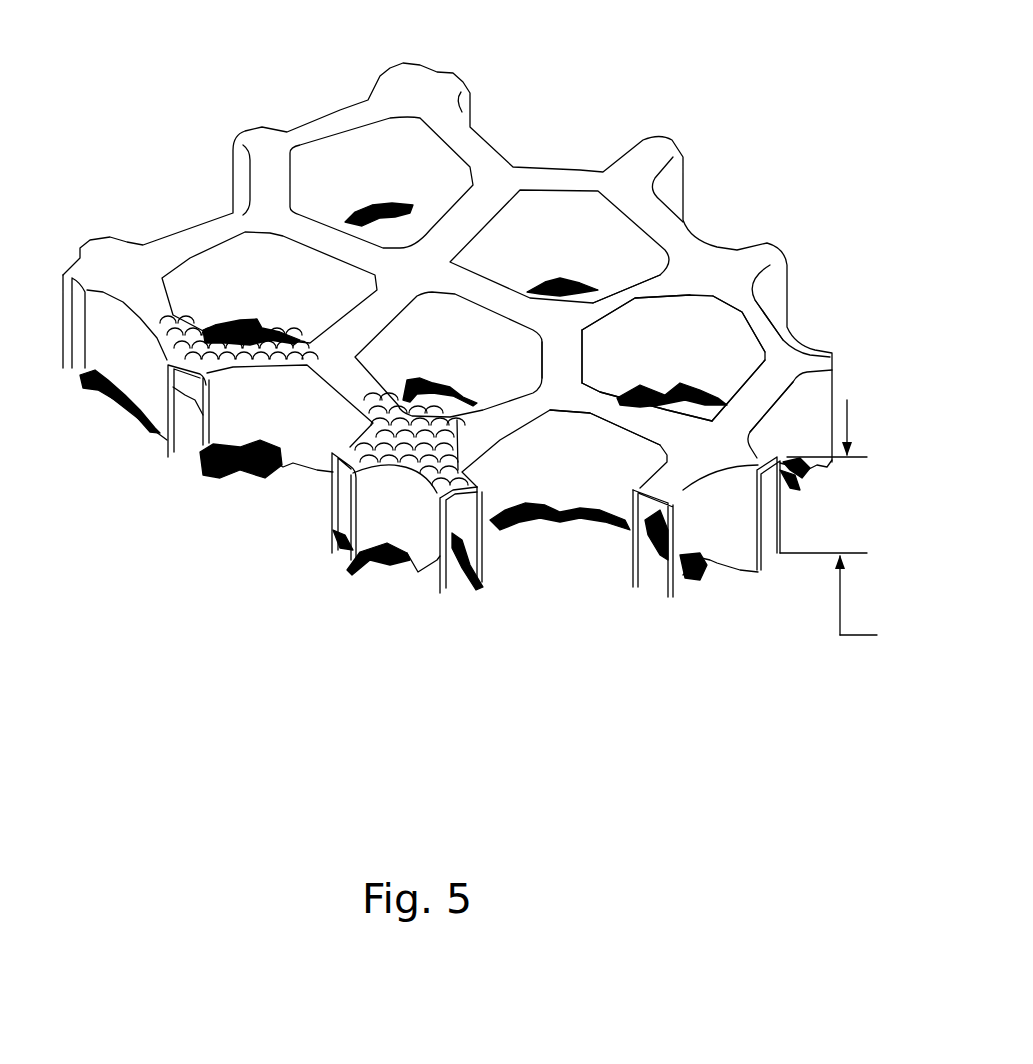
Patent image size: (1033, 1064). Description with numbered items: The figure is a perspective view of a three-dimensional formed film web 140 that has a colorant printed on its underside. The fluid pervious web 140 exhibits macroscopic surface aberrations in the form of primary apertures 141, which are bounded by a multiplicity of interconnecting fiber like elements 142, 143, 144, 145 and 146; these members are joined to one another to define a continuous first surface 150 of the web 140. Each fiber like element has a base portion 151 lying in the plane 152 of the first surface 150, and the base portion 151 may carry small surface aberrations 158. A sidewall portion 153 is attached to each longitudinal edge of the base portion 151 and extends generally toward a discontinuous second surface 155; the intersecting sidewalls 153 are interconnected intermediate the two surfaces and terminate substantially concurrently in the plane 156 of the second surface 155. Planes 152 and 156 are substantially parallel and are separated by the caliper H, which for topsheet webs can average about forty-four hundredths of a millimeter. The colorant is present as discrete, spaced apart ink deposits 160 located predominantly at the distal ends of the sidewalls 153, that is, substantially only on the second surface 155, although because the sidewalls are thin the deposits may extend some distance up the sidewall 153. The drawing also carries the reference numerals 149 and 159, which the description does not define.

The web 140 is at (212, 172).
The primary apertures 141 is at (351, 168).
The fiber like element 142 is at (695, 278).
The fiber like element 143 is at (778, 349).
The fiber like element 144 is at (779, 375).
The fiber like element 145 is at (686, 435).
The fiber like element 146 is at (562, 330).
The front face of panel 149 is at (576, 567).
The first surface 150 is at (477, 206).
The base portion 151 is at (470, 477).
The plane of first surface 152 is at (862, 449).
The sidewall portion 153 is at (440, 560).
The second surface 155 is at (738, 570).
The plane of second surface 156 is at (856, 549).
The surface aberrations 158 is at (378, 440).
The cell openings 159 is at (454, 348).
The ink deposits 160 is at (383, 203).